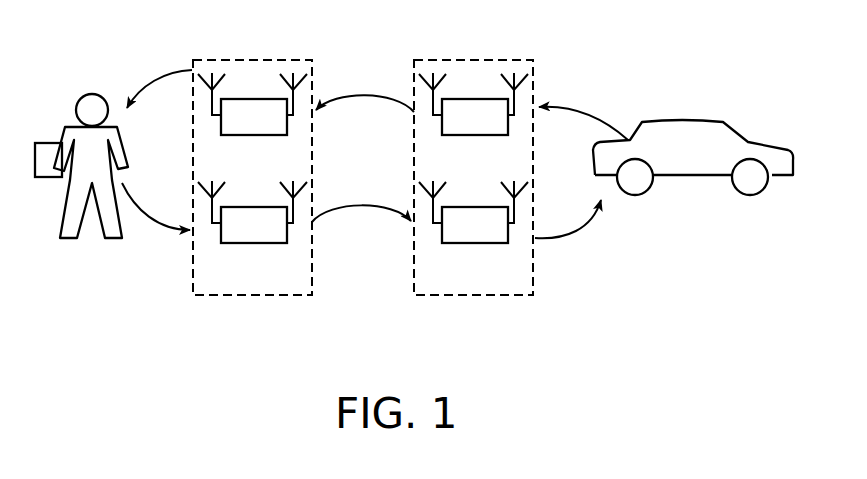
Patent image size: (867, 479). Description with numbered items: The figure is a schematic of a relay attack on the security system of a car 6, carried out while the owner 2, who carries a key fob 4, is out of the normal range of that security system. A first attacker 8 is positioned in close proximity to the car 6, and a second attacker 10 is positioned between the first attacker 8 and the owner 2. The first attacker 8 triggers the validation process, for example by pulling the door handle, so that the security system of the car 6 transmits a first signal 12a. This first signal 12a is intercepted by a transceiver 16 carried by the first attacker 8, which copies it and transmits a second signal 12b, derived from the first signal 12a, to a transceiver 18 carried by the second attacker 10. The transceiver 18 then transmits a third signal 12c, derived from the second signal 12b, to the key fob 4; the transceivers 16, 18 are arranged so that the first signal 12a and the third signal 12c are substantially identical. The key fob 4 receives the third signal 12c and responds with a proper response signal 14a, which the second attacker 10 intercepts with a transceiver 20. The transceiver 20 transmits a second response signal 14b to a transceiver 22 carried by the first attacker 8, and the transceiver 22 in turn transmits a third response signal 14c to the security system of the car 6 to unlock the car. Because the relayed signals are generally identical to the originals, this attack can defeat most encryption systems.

The owner 2 is at (93, 238).
The key fob 4 is at (48, 177).
The car 6 is at (693, 178).
The first attacker 8 is at (507, 295).
The second attacker 10 is at (287, 295).
The first signal 12a is at (582, 110).
The second signal 12b is at (363, 95).
The third signal 12c is at (153, 70).
The response signal 14a is at (158, 233).
The second response signal 14b is at (363, 205).
The third response signal 14c is at (573, 234).
The transceiver 16 is at (474, 135).
The transceiver 18 is at (253, 135).
The transceiver 20 is at (253, 243).
The transceiver 22 is at (474, 243).